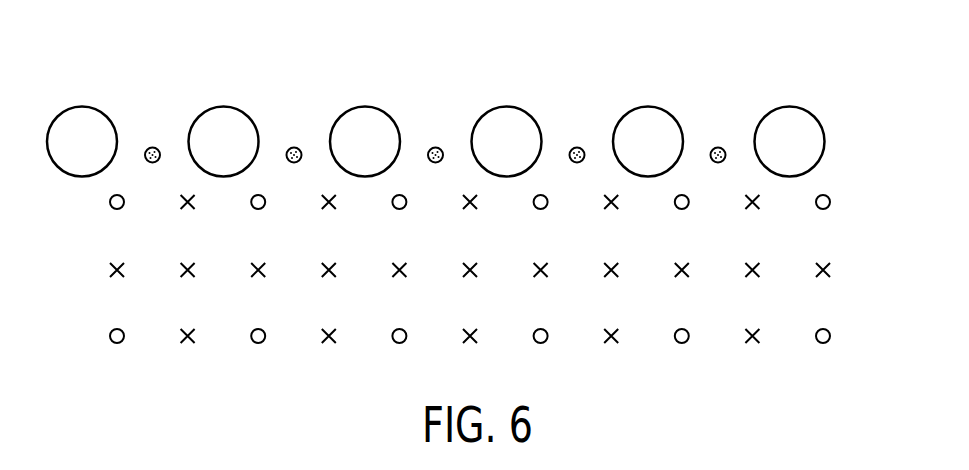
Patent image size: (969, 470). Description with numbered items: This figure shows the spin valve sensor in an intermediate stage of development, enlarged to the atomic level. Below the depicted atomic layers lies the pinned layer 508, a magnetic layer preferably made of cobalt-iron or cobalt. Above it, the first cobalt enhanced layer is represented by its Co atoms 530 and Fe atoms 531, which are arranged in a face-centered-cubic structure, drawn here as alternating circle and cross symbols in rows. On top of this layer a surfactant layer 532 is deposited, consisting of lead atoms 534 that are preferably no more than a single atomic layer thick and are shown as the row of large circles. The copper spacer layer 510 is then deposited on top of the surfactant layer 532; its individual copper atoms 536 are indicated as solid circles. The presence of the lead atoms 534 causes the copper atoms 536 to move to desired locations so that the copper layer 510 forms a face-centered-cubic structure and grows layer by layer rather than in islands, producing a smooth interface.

The pinned layer 508 is at (864, 229).
The copper spacer layer 510 is at (768, 80).
The Co atoms 530 is at (829, 270).
The Fe atoms 531 is at (830, 197).
The surfactant layer 532 is at (76, 92).
The lead atoms 534 is at (824, 139).
The copper atoms 536 is at (713, 148).